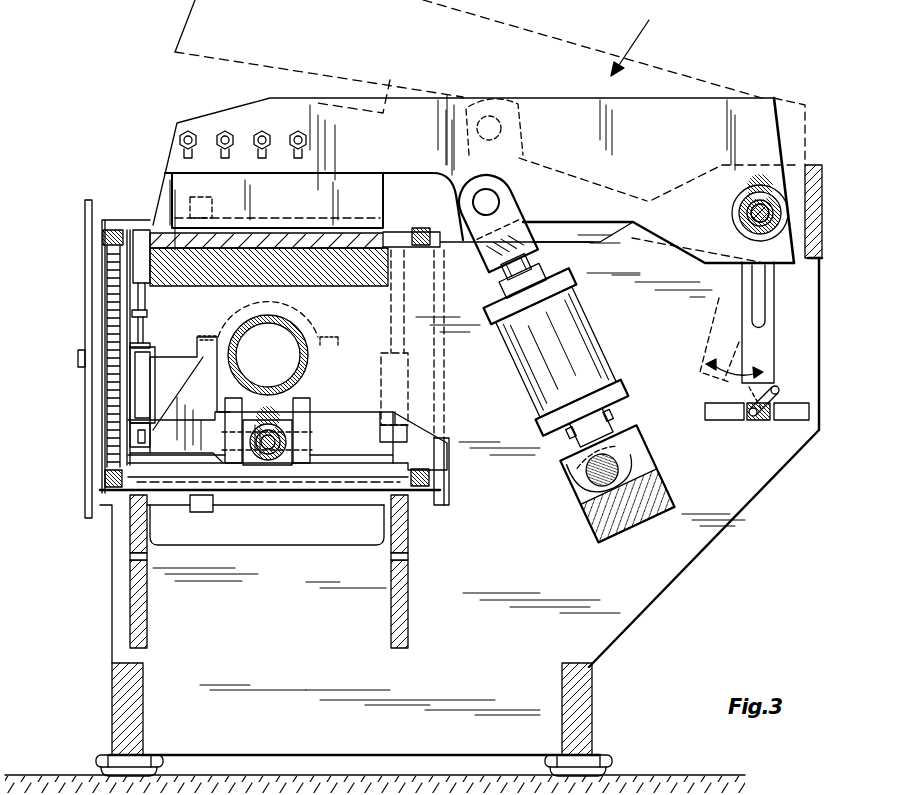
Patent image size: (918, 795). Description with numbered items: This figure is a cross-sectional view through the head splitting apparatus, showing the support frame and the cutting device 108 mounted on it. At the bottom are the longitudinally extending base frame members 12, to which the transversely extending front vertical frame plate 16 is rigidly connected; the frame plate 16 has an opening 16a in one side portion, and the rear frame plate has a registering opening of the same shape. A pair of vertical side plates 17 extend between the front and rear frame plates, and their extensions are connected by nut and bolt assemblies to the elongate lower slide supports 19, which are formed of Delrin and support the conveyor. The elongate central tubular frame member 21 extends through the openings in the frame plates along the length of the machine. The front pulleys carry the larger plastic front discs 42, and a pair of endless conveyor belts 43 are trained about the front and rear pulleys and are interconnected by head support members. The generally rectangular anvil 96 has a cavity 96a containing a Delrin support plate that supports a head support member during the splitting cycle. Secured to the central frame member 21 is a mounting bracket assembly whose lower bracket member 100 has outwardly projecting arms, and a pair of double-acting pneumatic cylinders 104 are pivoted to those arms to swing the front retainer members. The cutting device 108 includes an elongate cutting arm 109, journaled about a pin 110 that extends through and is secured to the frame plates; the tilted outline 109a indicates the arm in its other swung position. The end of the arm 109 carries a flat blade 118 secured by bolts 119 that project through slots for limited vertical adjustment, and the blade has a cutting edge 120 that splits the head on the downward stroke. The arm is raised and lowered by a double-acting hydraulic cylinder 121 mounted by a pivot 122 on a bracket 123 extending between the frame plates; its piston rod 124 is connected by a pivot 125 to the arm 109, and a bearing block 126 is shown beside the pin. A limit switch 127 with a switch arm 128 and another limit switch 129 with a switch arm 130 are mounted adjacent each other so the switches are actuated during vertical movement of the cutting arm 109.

The base frame member 12 is at (135, 708).
The front vertical frame plate 16 is at (637, 598).
The opening 16a is at (302, 517).
The vertical side plate 17 is at (148, 612).
The lower slide support 19 is at (130, 533).
The central tubular frame member 21 is at (298, 333).
The front disc 42 is at (88, 513).
The endless conveyor belt 43 is at (100, 236).
The anvil 96 is at (218, 280).
The cavity 96a is at (180, 247).
The lower bracket member 100 is at (343, 447).
The double-acting pneumatic cylinder 104 is at (138, 382).
The cutting device 108 is at (644, 38).
The cutting arm 109 is at (682, 107).
The ram head tilted position 109a is at (775, 130).
The pin 110 is at (772, 203).
The blade 118 is at (323, 183).
The bolts 119 is at (296, 131).
The cutting edge 120 is at (337, 218).
The double-acting hydraulic cylinder 121 is at (568, 337).
The pivot 122 is at (620, 459).
The bracket 123 is at (595, 542).
The piston rod 124 is at (540, 254).
The pivot 125 is at (488, 197).
The bearing block 126 is at (824, 220).
The limit switch 127 is at (709, 403).
The switch arm 128 is at (768, 422).
The limit switch 129 is at (794, 408).
The switch arm 130 is at (755, 383).